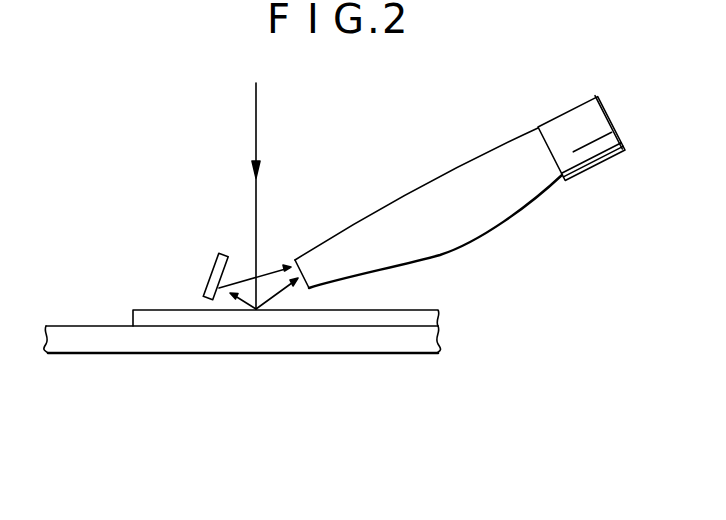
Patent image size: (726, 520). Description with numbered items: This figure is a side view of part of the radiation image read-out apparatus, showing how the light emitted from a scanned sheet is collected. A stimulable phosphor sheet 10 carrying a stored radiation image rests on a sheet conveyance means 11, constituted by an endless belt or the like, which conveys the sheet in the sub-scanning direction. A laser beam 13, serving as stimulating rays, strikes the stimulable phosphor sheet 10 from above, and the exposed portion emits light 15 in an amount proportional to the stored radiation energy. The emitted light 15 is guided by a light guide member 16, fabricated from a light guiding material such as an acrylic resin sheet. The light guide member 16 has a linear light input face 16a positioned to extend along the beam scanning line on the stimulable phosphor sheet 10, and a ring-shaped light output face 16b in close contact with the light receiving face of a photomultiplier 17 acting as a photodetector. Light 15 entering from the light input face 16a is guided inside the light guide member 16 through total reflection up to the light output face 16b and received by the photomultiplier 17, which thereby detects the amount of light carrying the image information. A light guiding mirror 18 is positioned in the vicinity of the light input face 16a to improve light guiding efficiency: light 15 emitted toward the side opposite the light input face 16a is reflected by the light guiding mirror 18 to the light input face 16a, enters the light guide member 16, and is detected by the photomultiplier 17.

The stimulable phosphor sheet 10 is at (156, 308).
The sheet conveyance means 11 is at (77, 325).
The laser beam 13 is at (256, 122).
The light 15 is at (240, 281).
The light guide member 16 is at (416, 170).
The light input face 16a is at (276, 272).
The light output face 16b is at (553, 145).
The photomultiplier 17 is at (577, 115).
The light guiding mirror 18 is at (210, 266).